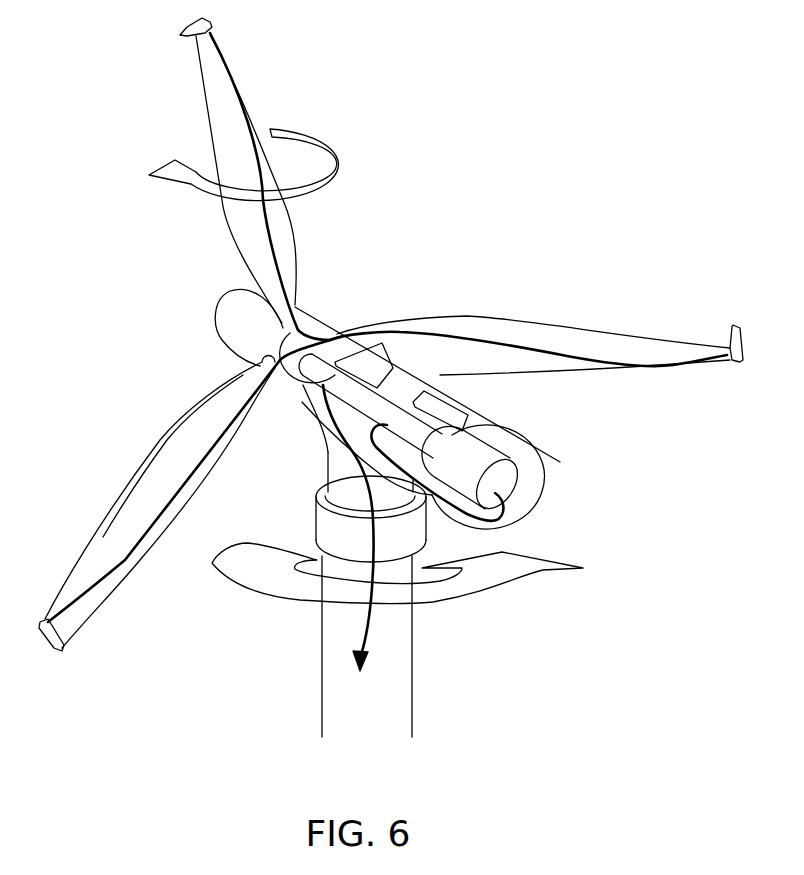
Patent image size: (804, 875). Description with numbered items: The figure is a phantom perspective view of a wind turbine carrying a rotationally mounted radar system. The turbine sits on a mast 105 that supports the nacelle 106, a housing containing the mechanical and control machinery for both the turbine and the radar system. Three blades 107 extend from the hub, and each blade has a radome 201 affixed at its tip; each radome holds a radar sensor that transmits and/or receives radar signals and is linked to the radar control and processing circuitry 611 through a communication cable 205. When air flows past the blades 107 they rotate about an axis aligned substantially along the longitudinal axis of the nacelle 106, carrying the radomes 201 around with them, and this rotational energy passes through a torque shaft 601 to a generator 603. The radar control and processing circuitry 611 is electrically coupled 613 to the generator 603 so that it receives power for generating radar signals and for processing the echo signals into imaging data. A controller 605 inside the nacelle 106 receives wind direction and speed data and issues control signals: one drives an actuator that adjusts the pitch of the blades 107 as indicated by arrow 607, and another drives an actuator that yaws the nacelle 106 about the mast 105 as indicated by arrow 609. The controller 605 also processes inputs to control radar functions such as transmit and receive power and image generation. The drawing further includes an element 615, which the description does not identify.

The mast 105 is at (403, 698).
The nacelle 106 is at (307, 437).
The blades 107 is at (300, 270).
The radome 201 is at (186, 33).
The communication cable 205 is at (253, 240).
The torque shaft 601 is at (520, 434).
The generator 603 is at (537, 462).
The controller 605 is at (447, 413).
The arrow indicating blade pitch 607 is at (323, 187).
The arrow indicating yaw 609 is at (533, 578).
The radar control and processing circuitry 611 is at (365, 366).
The electrical coupling 613 is at (532, 524).
The cable routing direction 615 is at (367, 638).